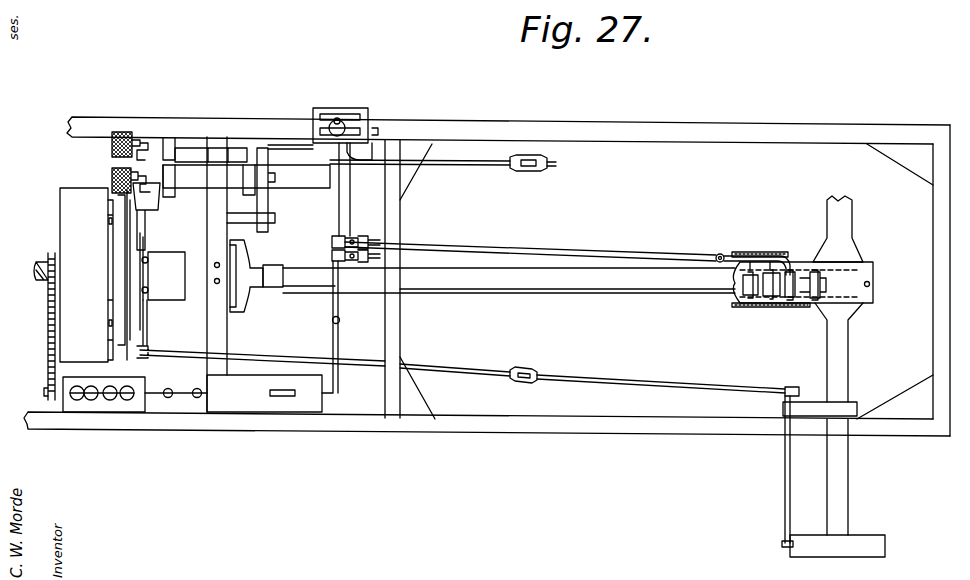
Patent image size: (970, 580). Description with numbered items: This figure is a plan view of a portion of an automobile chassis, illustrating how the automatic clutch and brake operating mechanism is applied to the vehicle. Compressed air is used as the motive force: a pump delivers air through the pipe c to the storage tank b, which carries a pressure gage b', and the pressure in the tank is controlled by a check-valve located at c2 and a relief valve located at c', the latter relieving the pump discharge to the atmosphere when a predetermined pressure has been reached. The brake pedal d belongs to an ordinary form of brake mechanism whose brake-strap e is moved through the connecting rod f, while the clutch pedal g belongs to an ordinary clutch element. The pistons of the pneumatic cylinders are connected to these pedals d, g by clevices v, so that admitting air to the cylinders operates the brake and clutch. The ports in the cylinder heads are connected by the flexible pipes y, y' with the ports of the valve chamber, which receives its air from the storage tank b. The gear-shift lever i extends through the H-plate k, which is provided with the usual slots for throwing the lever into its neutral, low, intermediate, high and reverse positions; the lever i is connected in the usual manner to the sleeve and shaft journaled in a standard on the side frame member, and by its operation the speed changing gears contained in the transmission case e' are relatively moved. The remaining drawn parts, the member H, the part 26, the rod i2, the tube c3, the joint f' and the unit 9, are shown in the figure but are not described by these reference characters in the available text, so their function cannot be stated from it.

The motor / electromagnet housing H is at (86, 275).
The brake pedal d is at (115, 131).
The clutch pedal g is at (110, 178).
The clevis v is at (140, 138).
The flexible pipe y is at (246, 176).
The flexible pipe y' is at (286, 116).
The H-plate k is at (366, 112).
The gear-shift lever i is at (340, 116).
The bracket 26 is at (375, 128).
The vertical rod i2 is at (352, 194).
The funnel tube c3 is at (302, 280).
The connecting rod f is at (468, 275).
The vertical rod with joint f' is at (345, 327).
The gear box 9 is at (121, 405).
The pipe c is at (537, 475).
The relief valve c' is at (170, 385).
The check-valve c2 is at (197, 388).
The storage tank b is at (264, 413).
The pressure gage b' is at (280, 422).
The transmission case e' is at (794, 293).
The brake-strap e is at (835, 392).